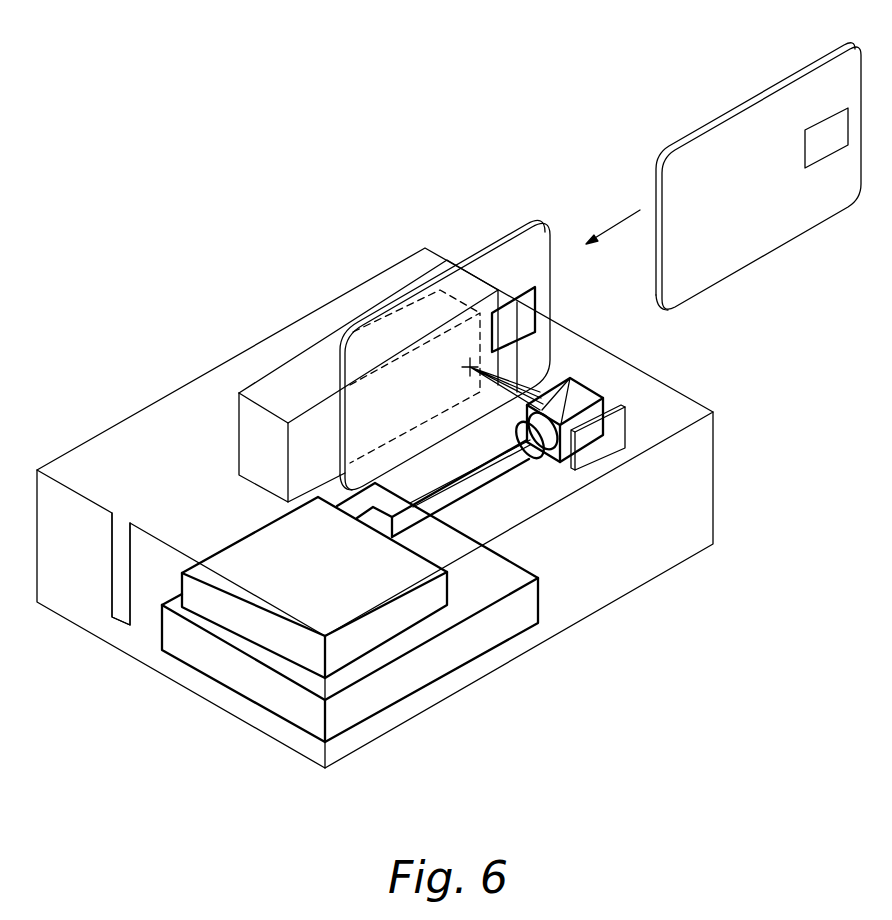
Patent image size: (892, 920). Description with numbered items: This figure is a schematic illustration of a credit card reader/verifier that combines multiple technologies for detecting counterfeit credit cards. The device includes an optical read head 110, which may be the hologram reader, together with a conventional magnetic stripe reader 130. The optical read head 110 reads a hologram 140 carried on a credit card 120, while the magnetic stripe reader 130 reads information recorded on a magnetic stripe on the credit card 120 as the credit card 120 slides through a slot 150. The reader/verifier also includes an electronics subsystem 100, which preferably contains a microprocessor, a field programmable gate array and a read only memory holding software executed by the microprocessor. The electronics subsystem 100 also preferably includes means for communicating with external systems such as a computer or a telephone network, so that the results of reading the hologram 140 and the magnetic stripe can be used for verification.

The electronics subsystem 100 is at (333, 775).
The optical read head 110 is at (567, 638).
The credit card 120 is at (478, 258).
The magnetic stripe reader 130 is at (278, 388).
The hologram 140 is at (835, 127).
The slot 150 is at (140, 493).